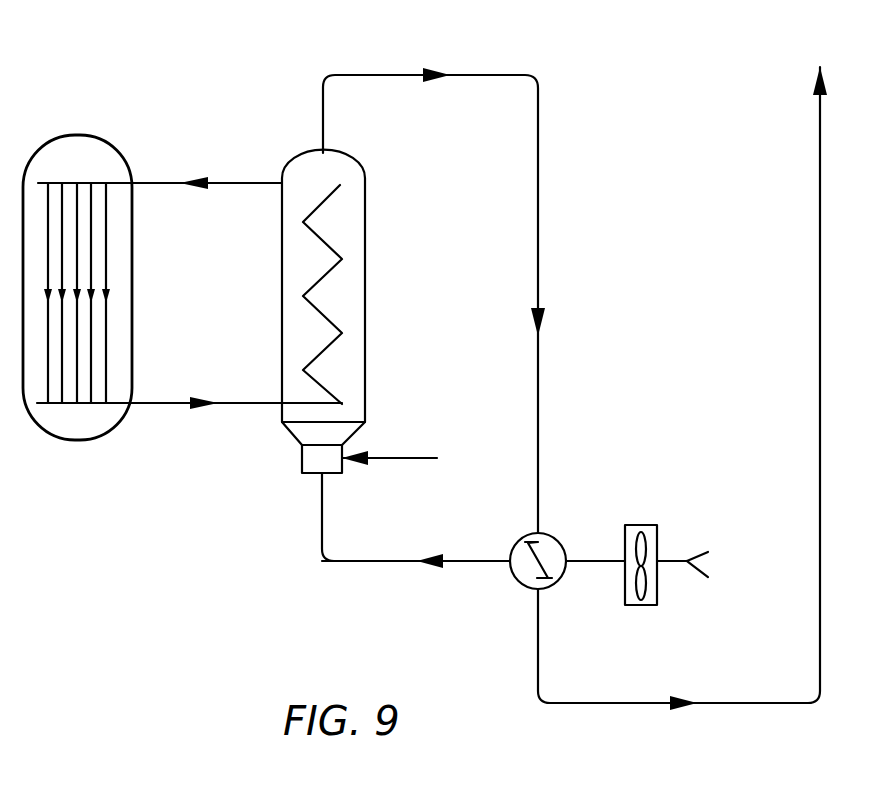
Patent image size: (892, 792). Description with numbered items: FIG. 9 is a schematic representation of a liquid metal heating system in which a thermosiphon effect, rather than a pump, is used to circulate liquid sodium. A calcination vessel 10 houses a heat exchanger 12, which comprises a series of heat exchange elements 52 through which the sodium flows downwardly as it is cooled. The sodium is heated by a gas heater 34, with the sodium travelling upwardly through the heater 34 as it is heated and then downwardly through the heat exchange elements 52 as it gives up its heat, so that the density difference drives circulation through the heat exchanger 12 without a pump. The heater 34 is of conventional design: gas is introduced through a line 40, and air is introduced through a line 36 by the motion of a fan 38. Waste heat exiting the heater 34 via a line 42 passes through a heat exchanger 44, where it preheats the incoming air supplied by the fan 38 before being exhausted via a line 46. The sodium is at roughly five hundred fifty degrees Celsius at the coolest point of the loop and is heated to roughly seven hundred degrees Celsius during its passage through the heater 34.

The calcination vessel 10 is at (132, 302).
The heat exchanger 12 is at (117, 347).
The heat exchange elements 52 is at (63, 238).
The gas heater 34 is at (367, 333).
The line 40 is at (408, 458).
The line 42 is at (483, 75).
The heat exchanger 44 is at (555, 537).
The fan 38 is at (657, 525).
The line 36 is at (670, 570).
The line 46 is at (820, 315).